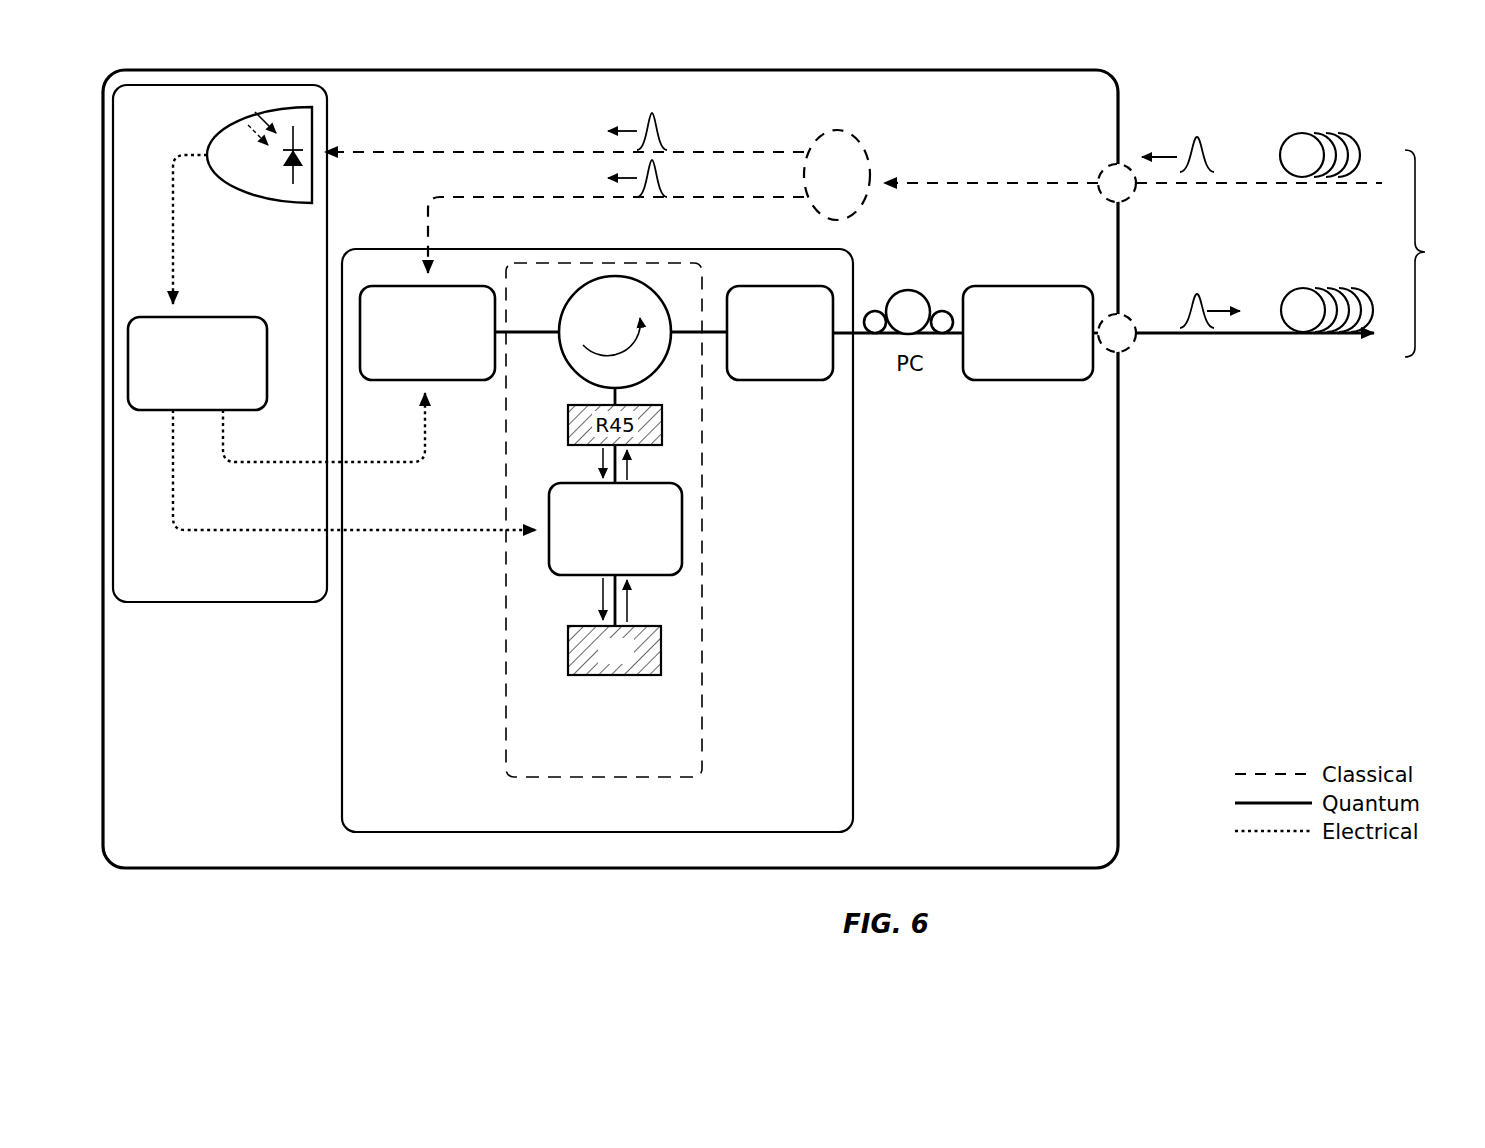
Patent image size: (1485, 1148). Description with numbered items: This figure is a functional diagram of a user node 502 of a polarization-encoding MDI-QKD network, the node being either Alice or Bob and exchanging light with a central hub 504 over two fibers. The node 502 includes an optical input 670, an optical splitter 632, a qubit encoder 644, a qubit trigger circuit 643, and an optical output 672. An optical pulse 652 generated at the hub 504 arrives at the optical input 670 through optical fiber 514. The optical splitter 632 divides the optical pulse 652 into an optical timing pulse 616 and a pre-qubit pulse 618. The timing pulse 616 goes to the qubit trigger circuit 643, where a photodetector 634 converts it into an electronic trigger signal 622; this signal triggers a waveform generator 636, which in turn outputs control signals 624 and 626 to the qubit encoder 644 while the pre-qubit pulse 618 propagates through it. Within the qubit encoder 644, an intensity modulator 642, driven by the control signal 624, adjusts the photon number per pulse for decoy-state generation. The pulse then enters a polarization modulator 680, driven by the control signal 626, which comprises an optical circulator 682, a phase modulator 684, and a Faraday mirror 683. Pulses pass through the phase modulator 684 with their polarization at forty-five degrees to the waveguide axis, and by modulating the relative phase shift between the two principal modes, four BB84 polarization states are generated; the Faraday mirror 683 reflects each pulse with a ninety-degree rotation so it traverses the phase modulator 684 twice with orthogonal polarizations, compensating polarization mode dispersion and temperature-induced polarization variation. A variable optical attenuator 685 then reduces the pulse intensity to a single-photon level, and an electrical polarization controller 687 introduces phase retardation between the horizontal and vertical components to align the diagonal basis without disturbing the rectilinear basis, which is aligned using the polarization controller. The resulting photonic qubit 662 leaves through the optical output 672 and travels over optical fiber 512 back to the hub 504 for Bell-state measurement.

The user node 502 is at (610, 469).
The hub 504 is at (1440, 253).
The optical fiber 512 is at (1312, 289).
The optical fiber 514 is at (1316, 132).
The optical timing pulse 616 is at (663, 135).
The pre-qubit pulse 618 is at (663, 182).
The electronic trigger signal 622 is at (172, 226).
The control signal 624 is at (264, 462).
The control signal 626 is at (264, 530).
The optical splitter 632 is at (837, 175).
The photodetector 634 is at (259, 155).
The waveform generator 636 is at (197, 363).
The intensity modulator 642 is at (427, 333).
The qubit trigger circuit 643 is at (220, 343).
The qubit encoder 644 is at (597, 540).
The optical pulse 652 is at (1198, 132).
The photonic qubit 662 is at (1199, 290).
The optical input 670 is at (1108, 164).
The optical output 672 is at (1127, 354).
The polarization modulator 680 is at (604, 520).
The optical circulator 682 is at (615, 332).
The Faraday mirror 683 is at (578, 674).
The phase modulator 684 is at (615, 529).
The variable optical attenuator 685 is at (780, 333).
The electrical polarization controller 687 is at (1028, 333).